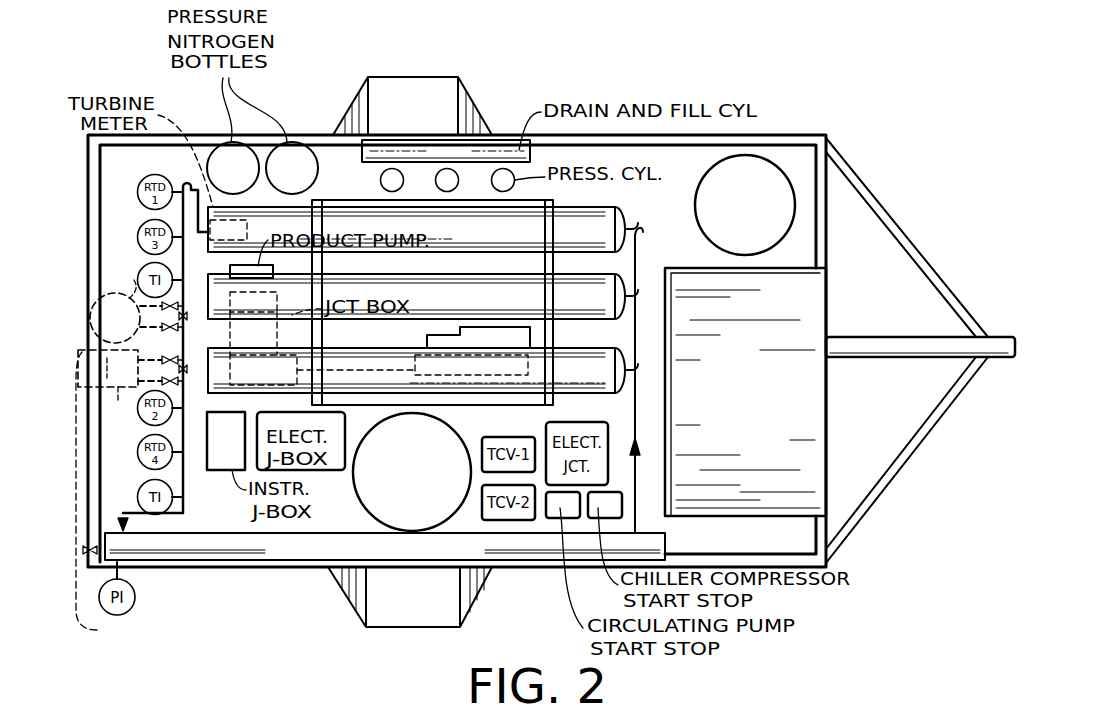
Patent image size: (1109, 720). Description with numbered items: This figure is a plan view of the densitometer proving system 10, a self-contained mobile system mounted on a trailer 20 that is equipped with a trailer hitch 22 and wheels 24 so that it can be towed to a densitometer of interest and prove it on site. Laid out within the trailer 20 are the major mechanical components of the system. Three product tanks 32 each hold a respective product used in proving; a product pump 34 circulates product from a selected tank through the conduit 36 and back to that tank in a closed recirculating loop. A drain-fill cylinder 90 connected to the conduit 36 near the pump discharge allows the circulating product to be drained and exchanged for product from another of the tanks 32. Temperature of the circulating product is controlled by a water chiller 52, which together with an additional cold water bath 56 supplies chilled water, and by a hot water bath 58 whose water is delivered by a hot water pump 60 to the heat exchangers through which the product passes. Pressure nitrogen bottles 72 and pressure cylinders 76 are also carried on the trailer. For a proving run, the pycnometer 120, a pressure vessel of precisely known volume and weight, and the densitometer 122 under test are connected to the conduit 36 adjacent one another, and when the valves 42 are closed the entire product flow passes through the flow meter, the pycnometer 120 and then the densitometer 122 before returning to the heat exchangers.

The densitometer proving system 10 is at (624, 80).
The trailer 20 is at (266, 582).
The trailer hitch 22 is at (1003, 345).
The wheels 24 is at (462, 90).
The product tanks 32 is at (485, 241).
The product pump 34 is at (274, 272).
The conduit 36 is at (180, 267).
The valves 42 is at (184, 368).
The water chiller 52 is at (734, 424).
The cold water bath 56 is at (734, 253).
The hot water bath 58 is at (401, 524).
The hot water pump 60 is at (472, 312).
The pressure nitrogen bottles 72 is at (244, 178).
The pressure cylinders 76 is at (399, 186).
The drain-fill cylinder 90 is at (458, 161).
The pycnometer 120 is at (131, 329).
The densitometer 122 is at (159, 496).